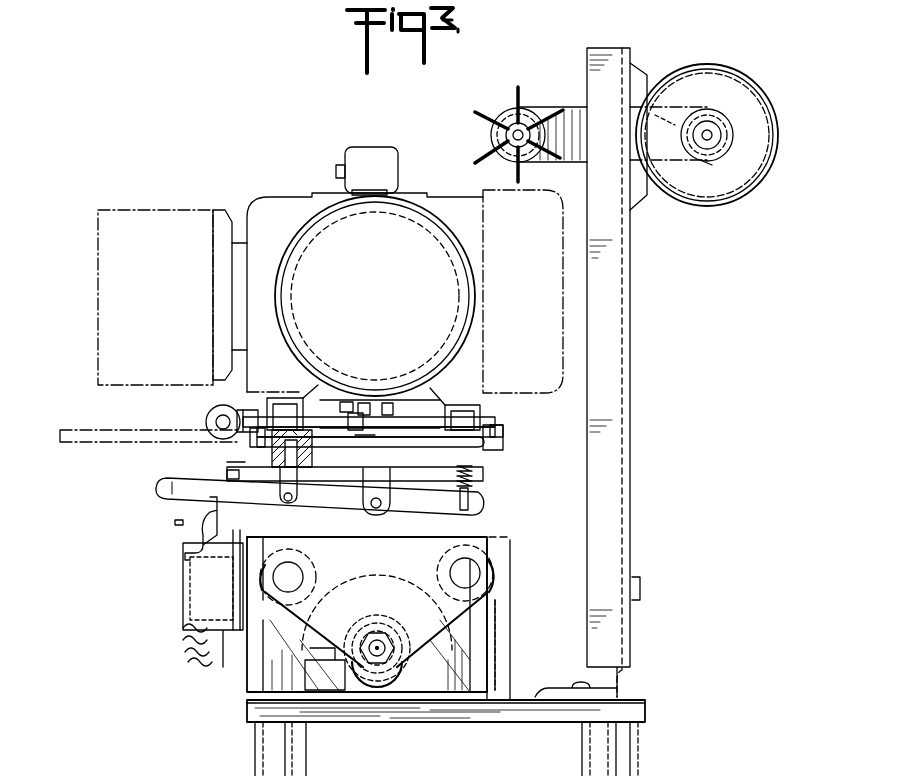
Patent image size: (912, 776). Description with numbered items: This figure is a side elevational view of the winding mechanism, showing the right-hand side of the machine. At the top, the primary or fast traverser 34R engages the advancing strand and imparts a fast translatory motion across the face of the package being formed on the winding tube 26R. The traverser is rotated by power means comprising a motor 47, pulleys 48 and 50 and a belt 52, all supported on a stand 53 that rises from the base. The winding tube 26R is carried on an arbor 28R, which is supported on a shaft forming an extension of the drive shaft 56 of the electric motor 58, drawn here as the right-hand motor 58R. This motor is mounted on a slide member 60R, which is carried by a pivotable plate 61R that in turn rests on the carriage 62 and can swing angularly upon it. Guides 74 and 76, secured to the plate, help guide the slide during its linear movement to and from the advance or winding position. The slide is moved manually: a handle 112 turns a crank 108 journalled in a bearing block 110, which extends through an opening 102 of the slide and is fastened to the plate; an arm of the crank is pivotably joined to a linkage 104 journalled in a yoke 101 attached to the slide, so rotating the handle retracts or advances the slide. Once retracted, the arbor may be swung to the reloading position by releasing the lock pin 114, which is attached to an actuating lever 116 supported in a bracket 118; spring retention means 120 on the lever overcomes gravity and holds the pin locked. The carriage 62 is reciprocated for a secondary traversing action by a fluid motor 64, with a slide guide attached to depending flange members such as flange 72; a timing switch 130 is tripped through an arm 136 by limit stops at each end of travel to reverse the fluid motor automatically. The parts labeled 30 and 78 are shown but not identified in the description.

The winding tube 26R is at (158, 210).
The arbor 28R is at (222, 215).
The electric motor 58 is at (288, 197).
The electric motor 58R is at (406, 250).
The crank 108 is at (318, 422).
The bearing block 110 is at (345, 400).
The linkage 104 is at (385, 402).
The yoke 101 is at (393, 420).
The slide member 60R is at (480, 428).
The pivotable plate 61R is at (488, 448).
The guide 76 is at (503, 430).
The handle 112 is at (237, 414).
The clamp block 78 is at (250, 447).
The lock pin 114 is at (312, 460).
The carriage 62 is at (357, 461).
The bracket 118 is at (385, 481).
The actuating lever 116 is at (157, 488).
The spring retention means 120 is at (475, 479).
The opening 102 is at (365, 437).
The guide 74 is at (235, 463).
The arm 136 is at (210, 530).
The timing switch 130 is at (183, 583).
The flange member 72 is at (392, 564).
The fluid motor 64 is at (382, 630).
The base frame 30 is at (233, 712).
The stand 53 is at (632, 455).
The pulley 48 is at (533, 115).
The primary or fast traverser 34R is at (490, 112).
The motor 47 is at (706, 66).
The pulley 50 is at (737, 133).
The belt 52 is at (660, 107).
The drive shaft 56 is at (710, 160).